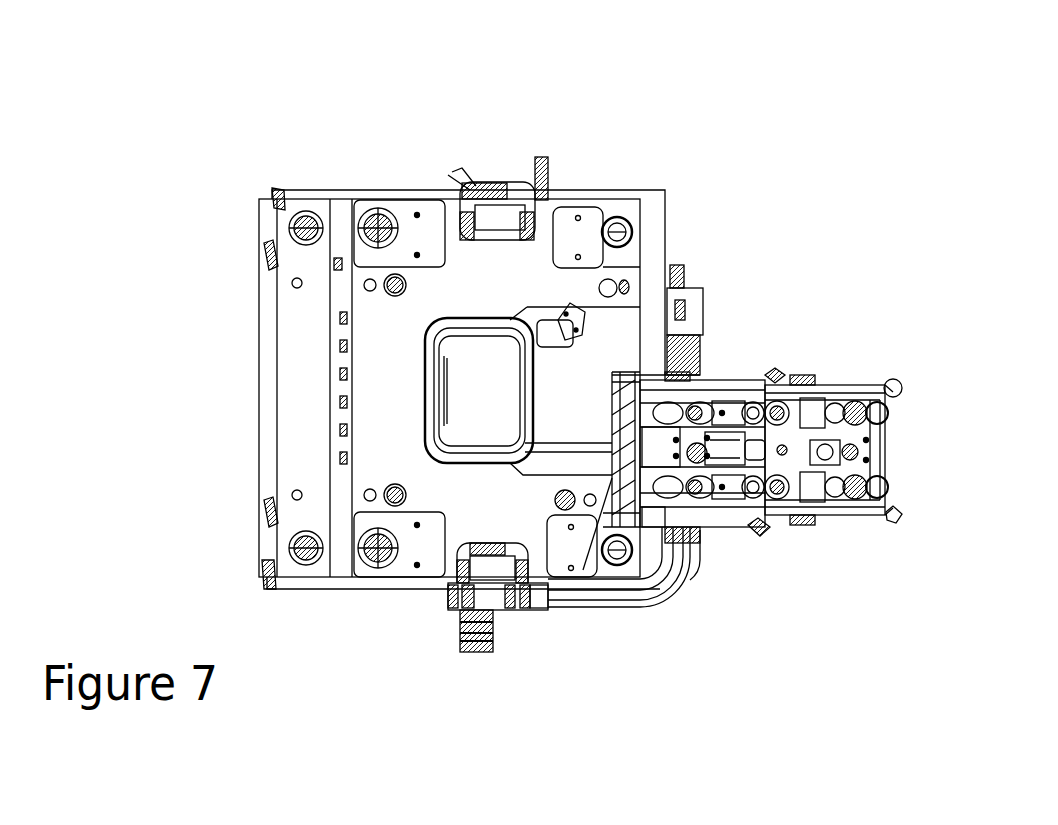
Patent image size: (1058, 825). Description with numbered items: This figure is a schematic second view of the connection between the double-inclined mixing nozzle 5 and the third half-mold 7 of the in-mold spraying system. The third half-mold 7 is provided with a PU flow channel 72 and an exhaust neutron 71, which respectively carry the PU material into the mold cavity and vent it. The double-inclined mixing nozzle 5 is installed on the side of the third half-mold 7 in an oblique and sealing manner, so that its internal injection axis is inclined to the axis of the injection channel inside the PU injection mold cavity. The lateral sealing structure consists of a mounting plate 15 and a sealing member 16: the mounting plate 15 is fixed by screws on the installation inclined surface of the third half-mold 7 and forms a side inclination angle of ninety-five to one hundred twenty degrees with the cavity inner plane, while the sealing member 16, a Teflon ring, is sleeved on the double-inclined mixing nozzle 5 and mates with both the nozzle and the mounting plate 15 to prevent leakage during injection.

The third half-mold 7 is at (618, 210).
The exhaust neutron 71 is at (572, 312).
The PU flow channel 72 is at (577, 445).
The double-inclined mixing nozzle 5 is at (745, 527).
The mounting plate 15 is at (660, 607).
The sealing member 16 is at (560, 603).